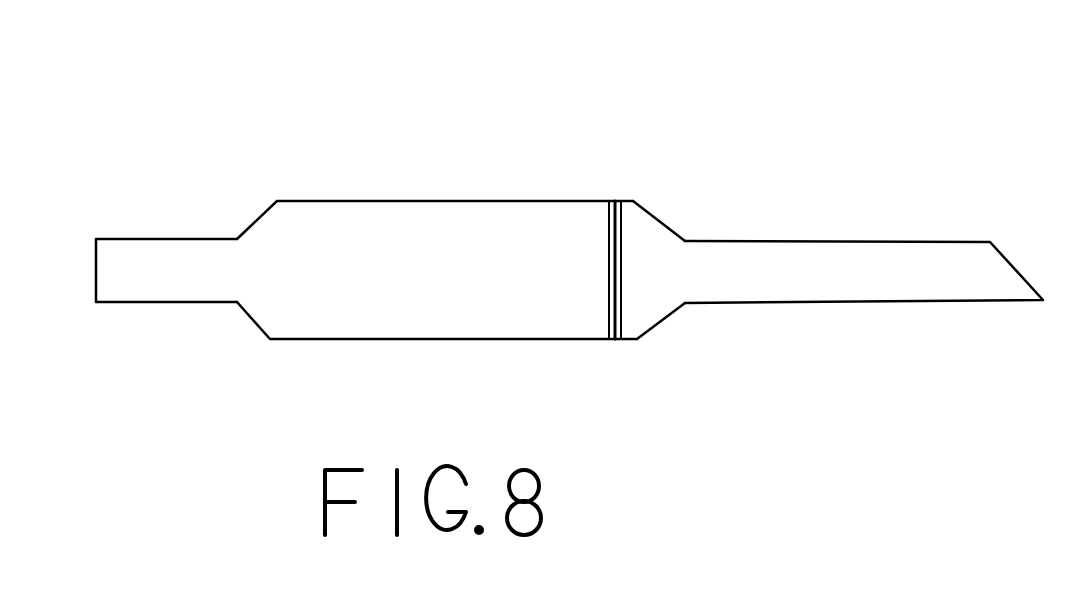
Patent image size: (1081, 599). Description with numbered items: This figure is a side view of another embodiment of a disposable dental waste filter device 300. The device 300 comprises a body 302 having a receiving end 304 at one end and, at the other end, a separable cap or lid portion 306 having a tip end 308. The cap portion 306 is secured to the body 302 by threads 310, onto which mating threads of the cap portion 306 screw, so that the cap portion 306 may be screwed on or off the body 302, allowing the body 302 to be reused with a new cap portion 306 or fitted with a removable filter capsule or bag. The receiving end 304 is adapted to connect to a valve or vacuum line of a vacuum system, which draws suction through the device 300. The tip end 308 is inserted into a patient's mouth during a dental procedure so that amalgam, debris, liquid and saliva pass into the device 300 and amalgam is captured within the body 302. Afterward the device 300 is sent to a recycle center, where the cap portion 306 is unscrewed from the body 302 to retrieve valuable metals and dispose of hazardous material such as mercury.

The disposable dental waste filter device 300 is at (424, 145).
The body 302 is at (326, 234).
The receiving end 304 is at (131, 259).
The cap portion 306 is at (654, 247).
The tip end 308 is at (910, 266).
The threads 310 is at (615, 340).